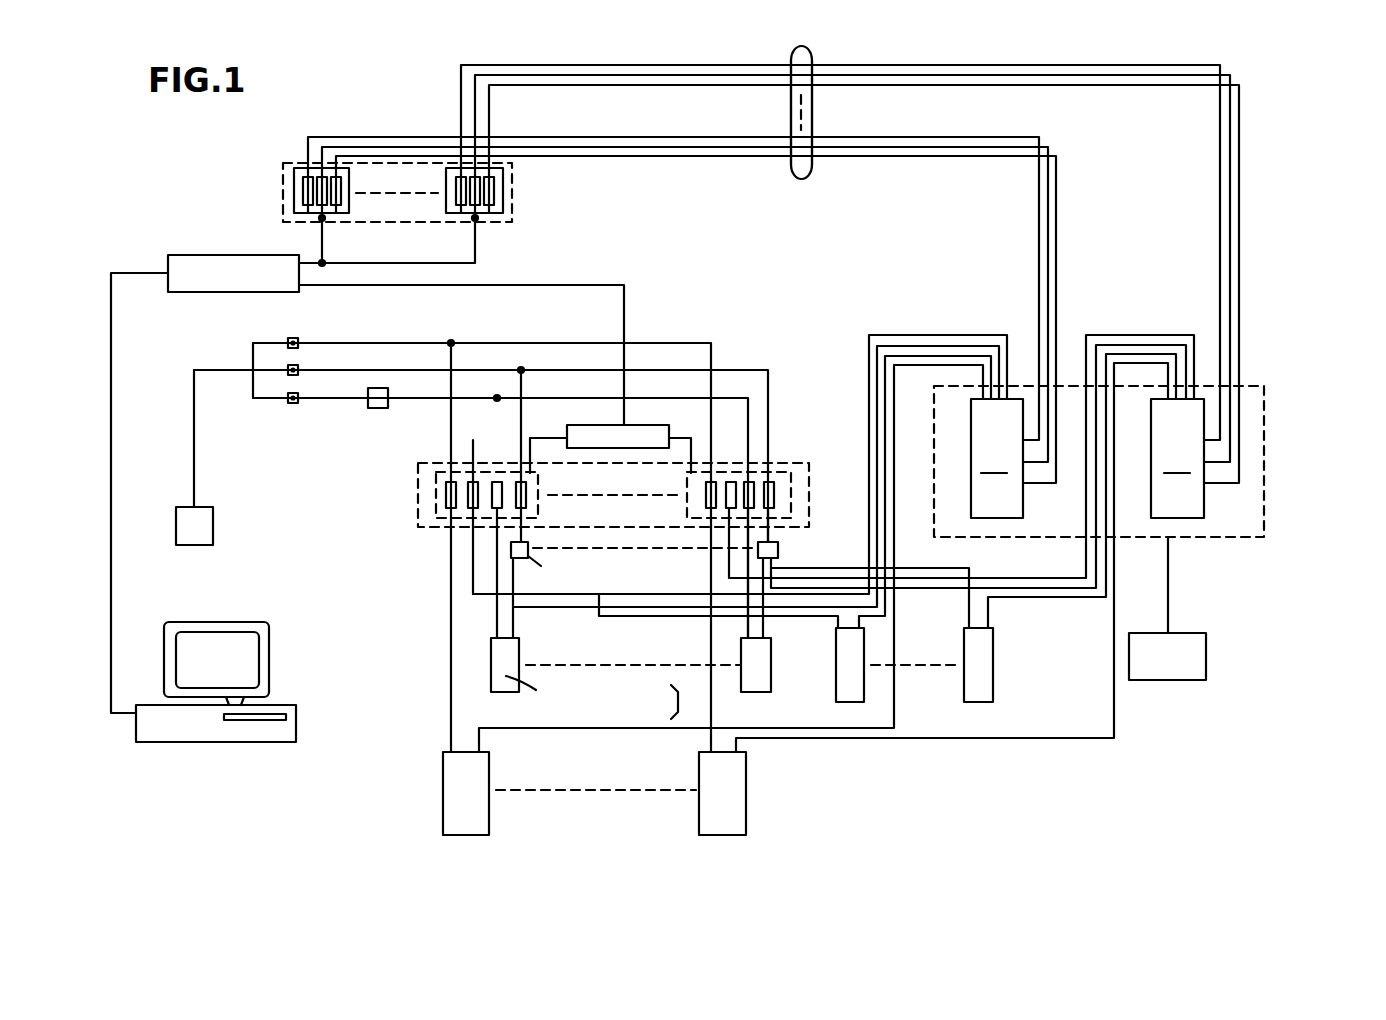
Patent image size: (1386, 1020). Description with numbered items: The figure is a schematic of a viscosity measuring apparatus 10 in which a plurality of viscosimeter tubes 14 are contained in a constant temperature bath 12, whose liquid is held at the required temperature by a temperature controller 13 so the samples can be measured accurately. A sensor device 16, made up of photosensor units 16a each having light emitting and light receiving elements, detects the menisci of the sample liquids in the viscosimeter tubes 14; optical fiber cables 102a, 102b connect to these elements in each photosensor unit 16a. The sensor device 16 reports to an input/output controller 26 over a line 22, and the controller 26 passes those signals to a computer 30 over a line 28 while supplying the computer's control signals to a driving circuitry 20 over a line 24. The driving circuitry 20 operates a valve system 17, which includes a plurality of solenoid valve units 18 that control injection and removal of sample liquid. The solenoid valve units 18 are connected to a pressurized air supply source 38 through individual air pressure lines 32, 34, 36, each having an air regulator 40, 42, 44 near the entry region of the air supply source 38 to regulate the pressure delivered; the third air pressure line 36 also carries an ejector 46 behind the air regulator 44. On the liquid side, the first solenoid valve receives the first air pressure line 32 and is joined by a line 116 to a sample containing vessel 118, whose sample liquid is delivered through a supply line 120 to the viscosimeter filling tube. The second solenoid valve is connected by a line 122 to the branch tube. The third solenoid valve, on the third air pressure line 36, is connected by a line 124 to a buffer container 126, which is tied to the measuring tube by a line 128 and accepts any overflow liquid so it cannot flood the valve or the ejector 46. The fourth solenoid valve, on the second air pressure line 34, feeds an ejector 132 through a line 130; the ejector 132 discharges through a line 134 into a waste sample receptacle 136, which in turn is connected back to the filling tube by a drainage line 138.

The viscosity measuring apparatus 10 is at (1062, 748).
The constant temperature bath 12 is at (1365, 612).
The temperature controller 13 is at (1315, 762).
The viscosimeter tube 14 is at (1167, 410).
The sensor device 16 is at (283, 161).
The photosensor unit 16a is at (350, 179).
The valve system 17 is at (417, 526).
The solenoid valve unit 18 is at (687, 500).
The driving circuitry 20 is at (645, 425).
The line 22 is at (373, 264).
The line 24 is at (505, 285).
The input/output controller 26 is at (195, 268).
The line 28 is at (112, 352).
The computer 30 is at (200, 678).
The first air pressure line 32 is at (395, 343).
The second air pressure line 34 is at (395, 371).
The third air pressure line 36 is at (405, 400).
The pressurized air supply source 38 is at (180, 534).
The air regulator 40 is at (287, 340).
The air regulator 42 is at (287, 368).
The air regulator 44 is at (287, 398).
The ejector 46 is at (369, 409).
The optical fiber cable 102a is at (813, 95).
The optical fiber cable 102b is at (833, 110).
The line 116 is at (445, 700).
The sample containing vessel 118 is at (442, 772).
The supply line 120 is at (518, 730).
The line 122 is at (470, 580).
The line 124 is at (493, 620).
The buffer container 126 is at (490, 650).
The line 128 is at (513, 627).
The line 130 is at (515, 530).
The ejector 132 is at (505, 550).
The line 134 is at (604, 615).
The waste sample receptacle 136 is at (967, 690).
The drainage line 138 is at (858, 621).